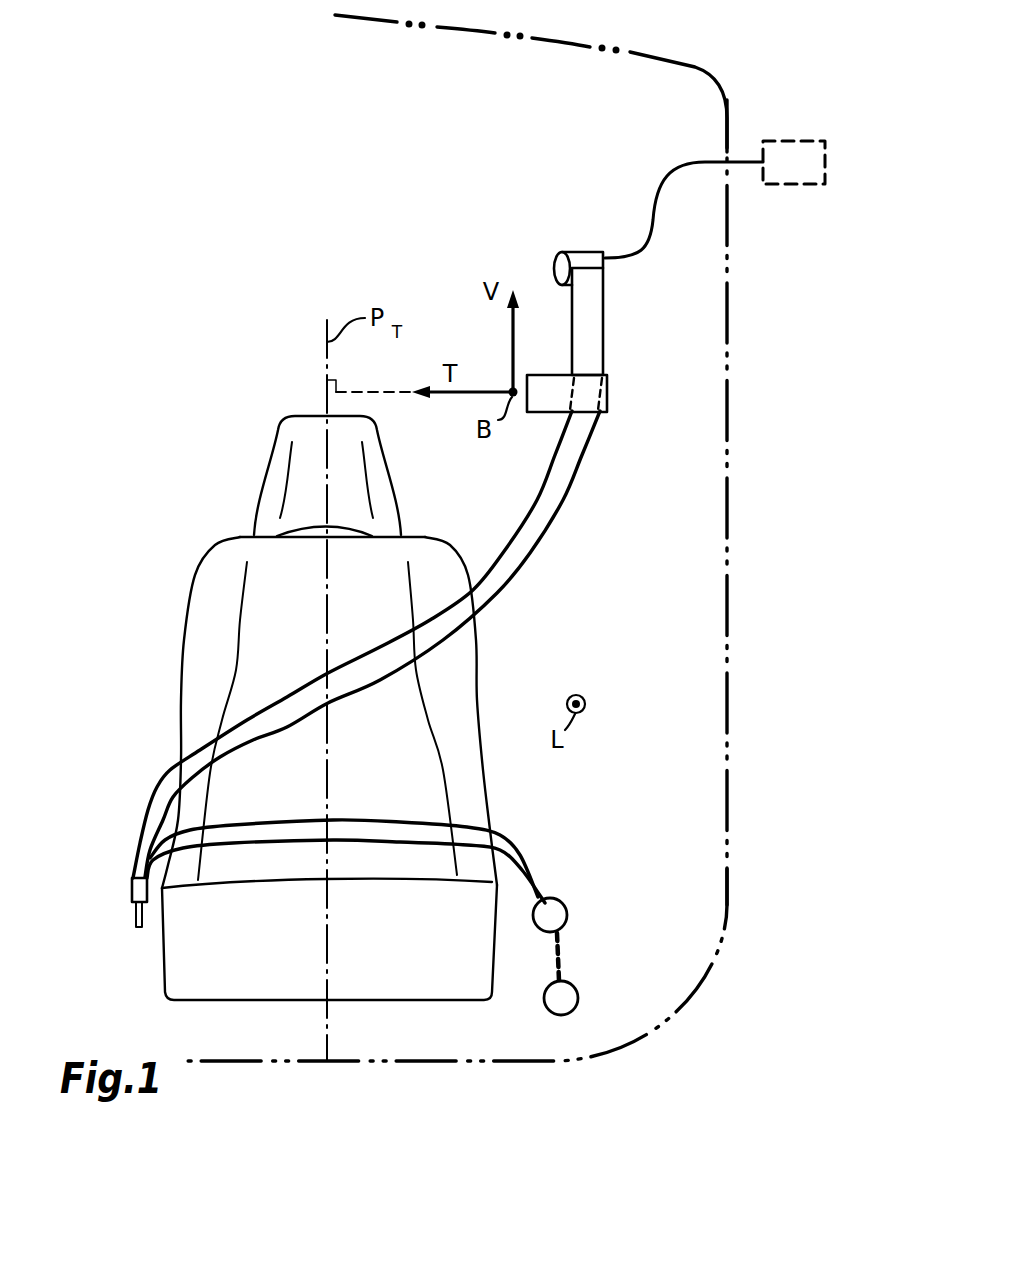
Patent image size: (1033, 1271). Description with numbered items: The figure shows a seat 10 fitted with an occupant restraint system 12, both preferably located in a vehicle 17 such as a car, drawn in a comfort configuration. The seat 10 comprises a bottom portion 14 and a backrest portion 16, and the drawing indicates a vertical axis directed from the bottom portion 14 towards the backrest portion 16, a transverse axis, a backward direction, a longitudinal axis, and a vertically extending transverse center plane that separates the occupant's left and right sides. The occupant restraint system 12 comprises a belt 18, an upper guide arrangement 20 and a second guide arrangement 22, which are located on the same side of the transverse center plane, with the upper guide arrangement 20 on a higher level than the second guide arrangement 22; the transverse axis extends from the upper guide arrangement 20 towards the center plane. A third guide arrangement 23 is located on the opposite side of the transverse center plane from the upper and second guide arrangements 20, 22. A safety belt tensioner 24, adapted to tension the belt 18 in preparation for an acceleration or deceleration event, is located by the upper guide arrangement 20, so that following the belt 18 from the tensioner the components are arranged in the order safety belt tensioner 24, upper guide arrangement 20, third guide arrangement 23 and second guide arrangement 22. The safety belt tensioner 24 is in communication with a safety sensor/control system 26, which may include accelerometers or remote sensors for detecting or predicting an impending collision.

The seat 10 is at (152, 423).
The occupant restraint system 12 is at (630, 475).
The bottom portion 14 is at (382, 975).
The backrest portion 16 is at (220, 618).
The vehicle 17 is at (682, 1015).
The belt 18 is at (500, 618).
The upper guide arrangement 20 is at (624, 397).
The second guide arrangement 22 is at (552, 910).
The third guide arrangement 23 is at (115, 900).
The safety belt tensioner 24 is at (558, 268).
The safety sensor/control system 26 is at (715, 199).